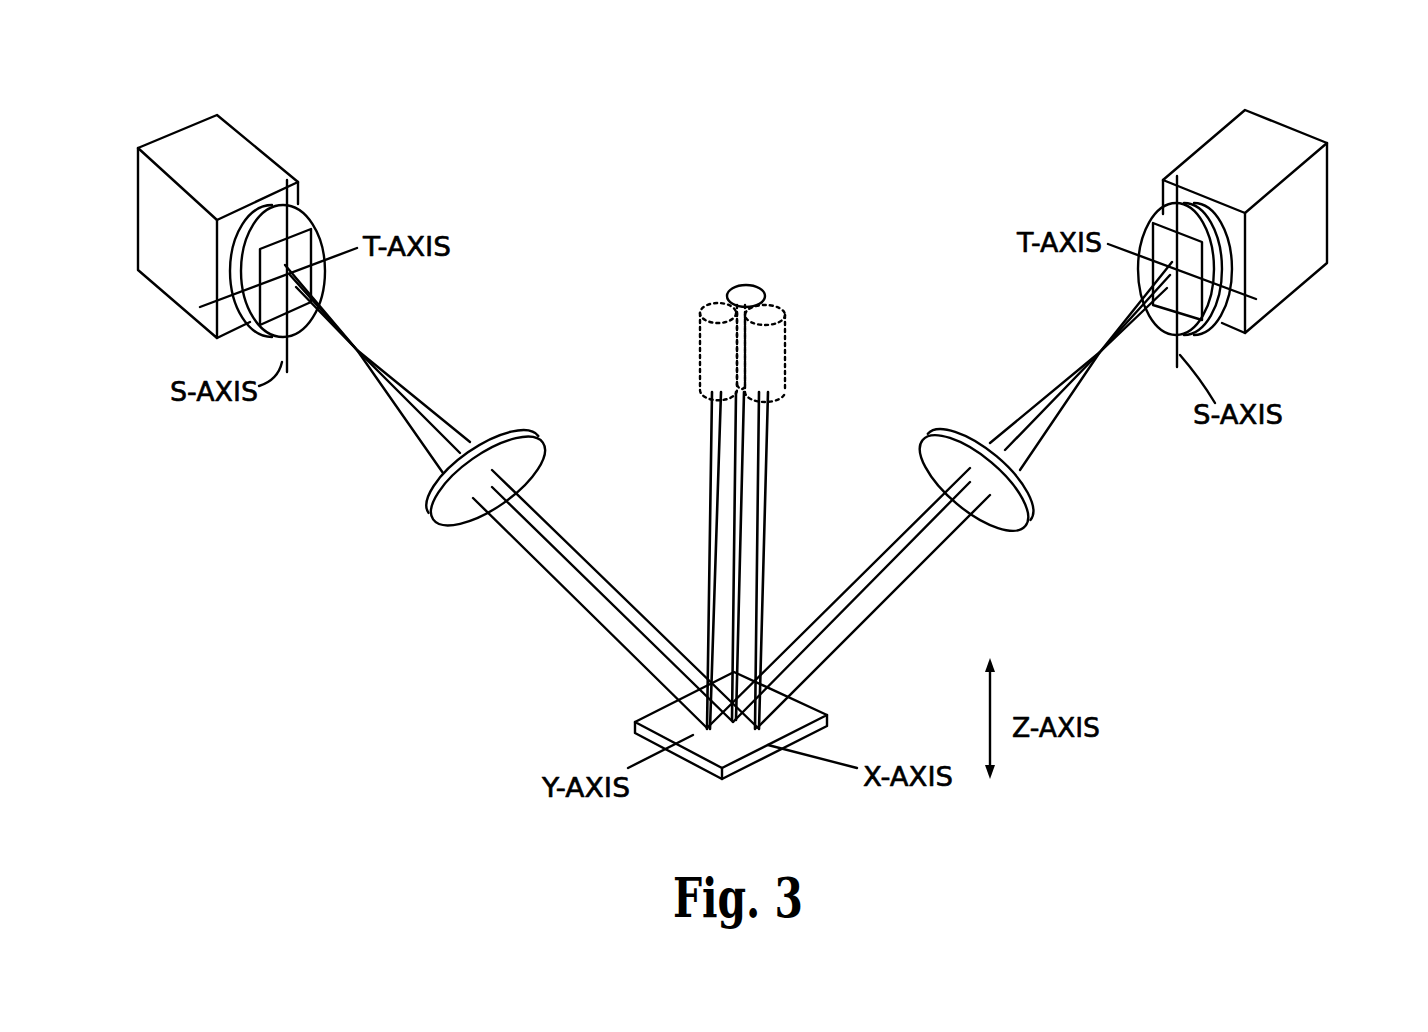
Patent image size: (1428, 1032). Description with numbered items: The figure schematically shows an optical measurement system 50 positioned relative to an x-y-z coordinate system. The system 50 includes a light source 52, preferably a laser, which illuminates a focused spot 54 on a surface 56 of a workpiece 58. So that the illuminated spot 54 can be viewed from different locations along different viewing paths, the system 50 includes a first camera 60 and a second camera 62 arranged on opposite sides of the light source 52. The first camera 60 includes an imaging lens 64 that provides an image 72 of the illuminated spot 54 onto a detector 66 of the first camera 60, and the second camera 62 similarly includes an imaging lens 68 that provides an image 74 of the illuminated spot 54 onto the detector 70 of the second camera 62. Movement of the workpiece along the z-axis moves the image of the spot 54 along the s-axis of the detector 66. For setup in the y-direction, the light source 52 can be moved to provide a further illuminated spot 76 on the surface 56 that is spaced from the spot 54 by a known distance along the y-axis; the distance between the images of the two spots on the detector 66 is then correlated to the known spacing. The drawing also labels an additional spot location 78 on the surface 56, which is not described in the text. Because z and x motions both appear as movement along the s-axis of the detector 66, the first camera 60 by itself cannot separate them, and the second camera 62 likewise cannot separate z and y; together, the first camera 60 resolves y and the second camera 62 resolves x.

The optical measurement system 50 is at (658, 218).
The light source 52 is at (750, 295).
The illuminated spot 54 is at (758, 762).
The surface 56 is at (803, 708).
The workpiece 58 is at (749, 780).
The first camera 60 is at (193, 153).
The second camera 62 is at (1267, 133).
The imaging lens 64 is at (457, 533).
The detector 66 is at (310, 240).
The imaging lens 68 is at (1030, 503).
The detector 70 is at (1160, 241).
The image 72 is at (285, 271).
The image 74 is at (1178, 270).
The illuminated spot 76 is at (760, 735).
The first beam spot 78 is at (706, 727).